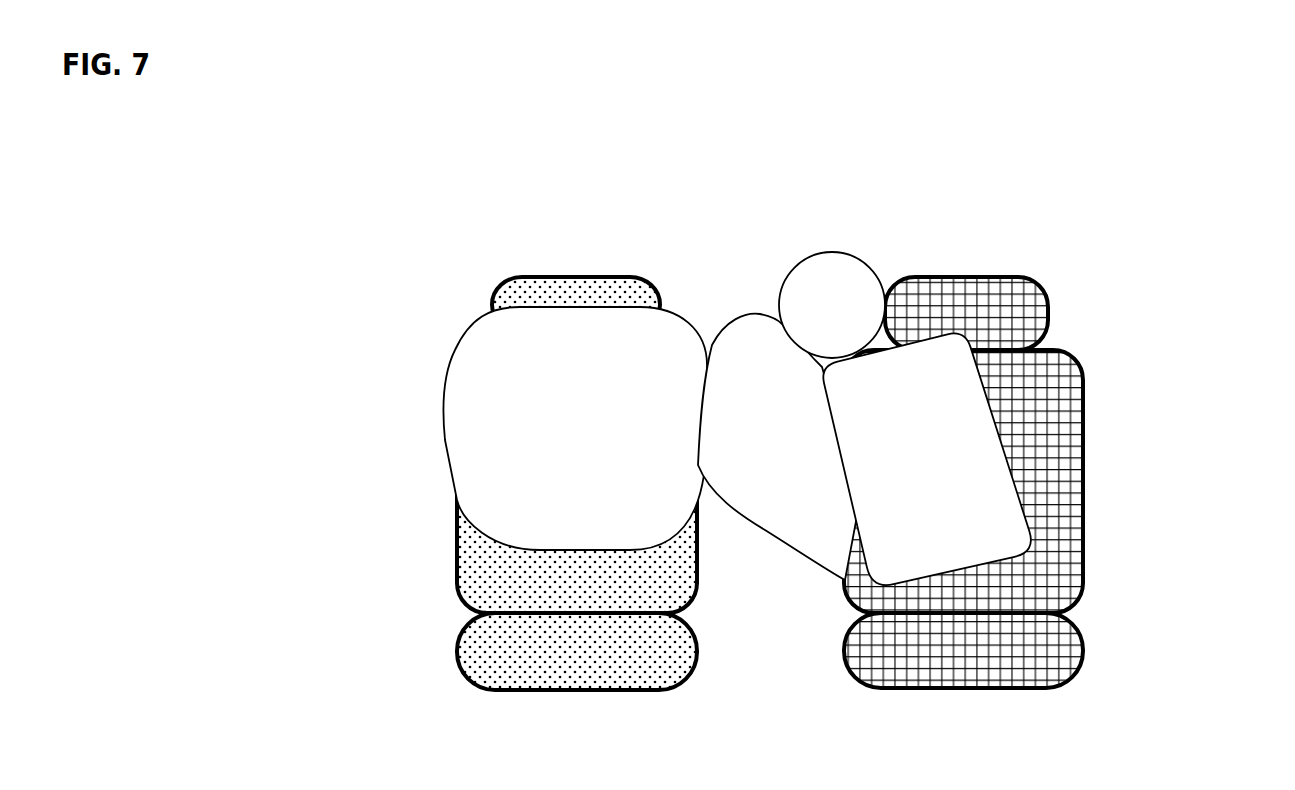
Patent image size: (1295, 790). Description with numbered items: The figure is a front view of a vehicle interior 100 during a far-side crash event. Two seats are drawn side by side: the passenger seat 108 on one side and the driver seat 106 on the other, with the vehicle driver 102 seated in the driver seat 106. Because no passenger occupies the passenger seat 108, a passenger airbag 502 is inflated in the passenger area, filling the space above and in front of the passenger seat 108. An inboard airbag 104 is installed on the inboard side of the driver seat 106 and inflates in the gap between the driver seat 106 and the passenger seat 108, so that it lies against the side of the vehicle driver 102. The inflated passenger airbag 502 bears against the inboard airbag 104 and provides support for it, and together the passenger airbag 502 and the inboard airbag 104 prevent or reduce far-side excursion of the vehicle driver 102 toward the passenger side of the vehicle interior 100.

The vehicle interior 100 is at (1168, 122).
The vehicle driver 102 is at (935, 451).
The inboard airbag 104 is at (785, 437).
The driver seat 106 is at (1080, 366).
The passenger seat 108 is at (570, 278).
The passenger airbag 502 is at (563, 421).